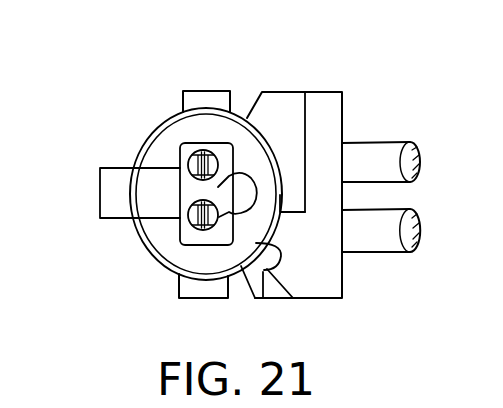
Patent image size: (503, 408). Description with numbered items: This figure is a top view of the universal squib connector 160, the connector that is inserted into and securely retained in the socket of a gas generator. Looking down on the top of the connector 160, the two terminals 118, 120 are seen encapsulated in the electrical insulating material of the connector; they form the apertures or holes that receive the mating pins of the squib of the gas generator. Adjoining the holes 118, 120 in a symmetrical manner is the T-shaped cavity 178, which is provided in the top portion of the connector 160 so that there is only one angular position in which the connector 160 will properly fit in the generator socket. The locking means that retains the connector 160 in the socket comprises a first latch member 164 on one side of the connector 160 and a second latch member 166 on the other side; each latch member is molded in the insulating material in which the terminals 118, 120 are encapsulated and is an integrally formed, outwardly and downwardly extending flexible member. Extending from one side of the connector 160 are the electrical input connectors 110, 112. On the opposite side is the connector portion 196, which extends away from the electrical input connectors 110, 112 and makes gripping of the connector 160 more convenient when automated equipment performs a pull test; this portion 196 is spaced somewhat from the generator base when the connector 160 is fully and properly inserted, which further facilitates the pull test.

The electrical input connector 110 is at (403, 147).
The electrical input connector 112 is at (403, 218).
The terminal 118 is at (190, 221).
The terminal 120 is at (187, 143).
The universal squib connector 160 is at (333, 103).
The first latch member 164 is at (215, 91).
The second latch member 166 is at (193, 292).
The T-shaped cavity 178 is at (180, 172).
The connector portion 196 is at (105, 208).